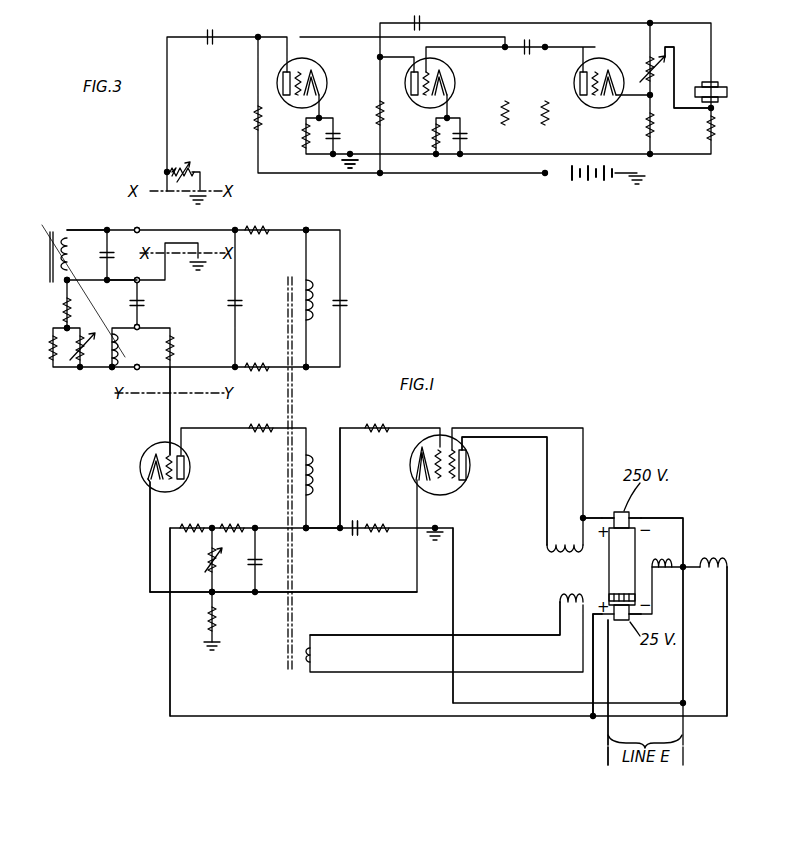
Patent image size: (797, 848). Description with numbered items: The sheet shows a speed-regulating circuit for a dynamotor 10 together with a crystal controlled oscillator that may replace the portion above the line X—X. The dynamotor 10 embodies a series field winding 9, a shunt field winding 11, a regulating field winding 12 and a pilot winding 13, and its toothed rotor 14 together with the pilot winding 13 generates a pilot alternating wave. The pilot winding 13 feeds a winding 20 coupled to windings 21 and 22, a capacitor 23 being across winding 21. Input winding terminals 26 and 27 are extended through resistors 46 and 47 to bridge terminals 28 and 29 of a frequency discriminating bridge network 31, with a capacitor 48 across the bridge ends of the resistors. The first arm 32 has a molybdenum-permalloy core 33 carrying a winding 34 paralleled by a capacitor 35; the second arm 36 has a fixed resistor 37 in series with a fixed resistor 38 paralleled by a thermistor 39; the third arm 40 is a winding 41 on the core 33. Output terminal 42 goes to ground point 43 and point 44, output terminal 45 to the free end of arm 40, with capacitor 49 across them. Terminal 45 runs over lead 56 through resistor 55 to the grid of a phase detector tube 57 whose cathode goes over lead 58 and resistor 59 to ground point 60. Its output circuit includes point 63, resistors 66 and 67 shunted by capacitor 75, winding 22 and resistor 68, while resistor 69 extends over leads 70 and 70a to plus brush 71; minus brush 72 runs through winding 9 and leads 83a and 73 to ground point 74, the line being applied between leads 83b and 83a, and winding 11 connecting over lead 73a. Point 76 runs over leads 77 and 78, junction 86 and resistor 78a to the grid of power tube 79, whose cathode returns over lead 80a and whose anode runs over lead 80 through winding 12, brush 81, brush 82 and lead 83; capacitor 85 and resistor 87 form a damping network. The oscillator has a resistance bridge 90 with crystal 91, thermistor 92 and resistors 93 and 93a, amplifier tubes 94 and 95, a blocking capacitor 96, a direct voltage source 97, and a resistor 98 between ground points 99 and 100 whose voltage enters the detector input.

In FIG. 1, the series field winding 9 is at (665, 557).
In FIG. 1, the dynamotor 10 is at (621, 566).
In FIG. 1, the shunt field winding 11 is at (707, 556).
In FIG. 1, the regulating field winding 12 is at (562, 532).
In FIG. 1, the pilot winding 13 is at (570, 596).
In FIG. 1, the toothed rotor 14 is at (622, 593).
In FIG. 1, the electrical winding 20 is at (318, 655).
In FIG. 1, the electrical winding 21 is at (312, 284).
In FIG. 1, the electrical winding 22 is at (312, 470).
In FIG. 1, the capacitor 23 is at (348, 303).
In FIG. 1, the input winding terminal 26 is at (308, 370).
In FIG. 1, the input winding terminal 27 is at (308, 228).
In FIG. 1, the bridge terminal 28 is at (139, 370).
In FIG. 1, the bridge terminal 29 is at (140, 228).
In FIG. 1, the frequency discriminating bridge network 31 is at (120, 292).
In FIG. 1, the first arm 32 is at (95, 238).
In FIG. 1, the molybdenum-permalloy core 33 is at (52, 258).
In FIG. 1, the electrical winding 34 is at (72, 258).
In FIG. 1, the capacitor 35 is at (112, 252).
In FIG. 1, the second arm 36 is at (64, 324).
In FIG. 1, the fixed resistor 37 is at (72, 310).
In FIG. 1, the fixed resistor 38 is at (50, 350).
In FIG. 1, the thermistor 39 is at (90, 355).
In FIG. 1, the third arm 40 is at (120, 338).
In FIG. 1, the electrical winding 41 is at (108, 369).
In FIG. 1, the output terminal 42 is at (137, 277).
In FIG. 1, the ground point 43 is at (202, 270).
In FIG. 1, the point 44 is at (64, 283).
In FIG. 1, the output terminal 45 is at (140, 326).
In FIG. 1, the resistor 46 is at (255, 362).
In FIG. 1, the resistor 47 is at (252, 236).
In FIG. 1, the capacitor 48 is at (238, 305).
In FIG. 1, the capacitor 49 is at (146, 305).
In FIG. 1, the resistor 55 is at (178, 348).
In FIG. 1, the lead 56 is at (172, 378).
In FIG. 1, the phase detector tube 57 is at (146, 458).
In FIG. 1, the lead 58 is at (149, 500).
In FIG. 1, the resistor 59 is at (218, 622).
In FIG. 1, the point at ground potential 60 is at (220, 646).
In FIG. 1, the point 63 is at (214, 590).
In FIG. 1, the resistor 66 is at (206, 560).
In FIG. 1, the resistor 67 is at (240, 524).
In FIG. 1, the resistor 68 is at (251, 434).
In FIG. 1, the resistor 69 is at (190, 524).
In FIG. 1, the lead 70 is at (170, 610).
In FIG. 1, the lead 70a is at (592, 680).
In FIG. 1, the plus brush 71 is at (604, 618).
In FIG. 1, the minus brush 72 is at (642, 617).
In FIG. 1, the lead 73 is at (455, 620).
In FIG. 1, the lead 73a is at (729, 628).
In FIG. 1, the ground point 74 is at (433, 548).
In FIG. 1, the capacitor 75 is at (262, 560).
In FIG. 1, the point 76 is at (308, 526).
In FIG. 1, the lead 77 is at (327, 532).
In FIG. 1, the lead 78 is at (341, 497).
In FIG. 1, the resistor 78a is at (383, 434).
In FIG. 1, the power tube 79 is at (412, 452).
In FIG. 1, the lead 80 is at (492, 437).
In FIG. 1, the lead 80a is at (335, 590).
In FIG. 1, the plus brush 81 is at (610, 512).
In FIG. 1, the minus brush 82 is at (634, 513).
In FIG. 1, the lead 83 is at (685, 530).
In FIG. 1, the lead 83a is at (684, 670).
In FIG. 1, the lead 83b is at (608, 727).
In FIG. 1, the capacitor 85 is at (358, 521).
In FIG. 1, the junction point 86 is at (348, 534).
In FIG. 1, the resistor 87 is at (380, 534).
In FIG. 3, the resistance bridge 90 is at (688, 91).
In FIG. 3, the crystal 91 is at (728, 92).
In FIG. 3, the thermistor 92 is at (668, 72).
In FIG. 3, the resistor 93 is at (643, 125).
In FIG. 3, the resistor 93a is at (728, 128).
In FIG. 3, the space discharge tube 94 is at (595, 108).
In FIG. 3, the space discharge tube 95 is at (455, 80).
In FIG. 3, the capacitor 96 is at (421, 22).
In FIG. 3, the source of direct voltage 97 is at (328, 75).
In FIG. 3, the resistor 98 is at (188, 165).
In FIG. 3, the ground point 99 is at (215, 198).
In FIG. 3, the ground point 100 is at (358, 162).